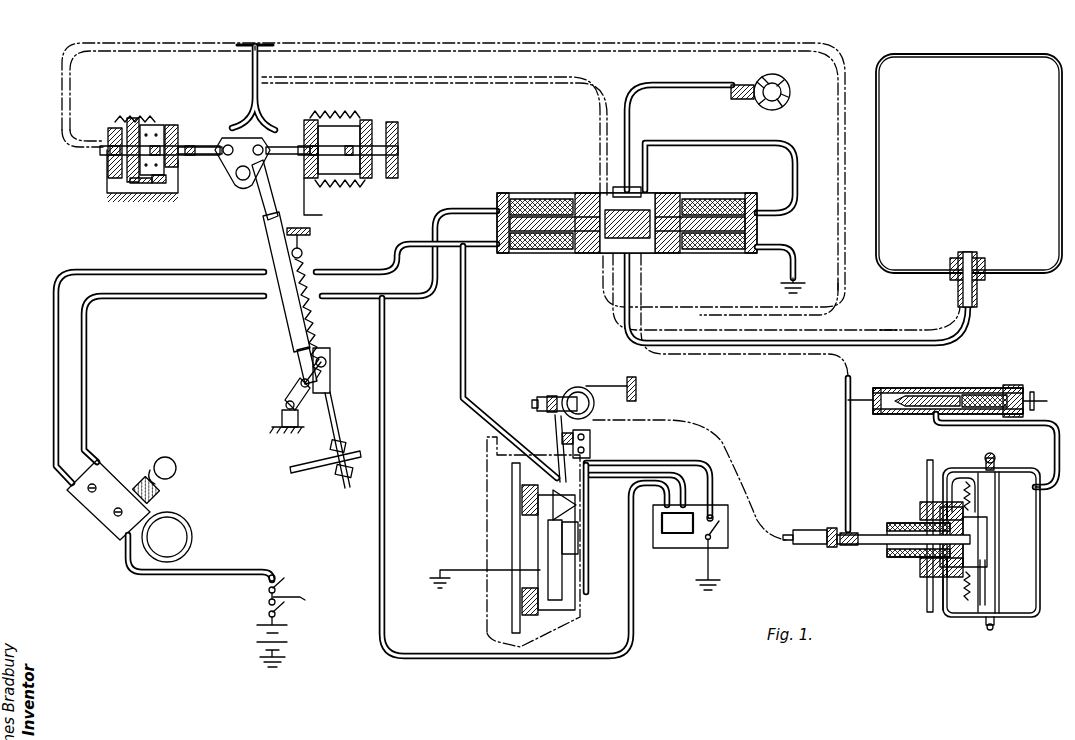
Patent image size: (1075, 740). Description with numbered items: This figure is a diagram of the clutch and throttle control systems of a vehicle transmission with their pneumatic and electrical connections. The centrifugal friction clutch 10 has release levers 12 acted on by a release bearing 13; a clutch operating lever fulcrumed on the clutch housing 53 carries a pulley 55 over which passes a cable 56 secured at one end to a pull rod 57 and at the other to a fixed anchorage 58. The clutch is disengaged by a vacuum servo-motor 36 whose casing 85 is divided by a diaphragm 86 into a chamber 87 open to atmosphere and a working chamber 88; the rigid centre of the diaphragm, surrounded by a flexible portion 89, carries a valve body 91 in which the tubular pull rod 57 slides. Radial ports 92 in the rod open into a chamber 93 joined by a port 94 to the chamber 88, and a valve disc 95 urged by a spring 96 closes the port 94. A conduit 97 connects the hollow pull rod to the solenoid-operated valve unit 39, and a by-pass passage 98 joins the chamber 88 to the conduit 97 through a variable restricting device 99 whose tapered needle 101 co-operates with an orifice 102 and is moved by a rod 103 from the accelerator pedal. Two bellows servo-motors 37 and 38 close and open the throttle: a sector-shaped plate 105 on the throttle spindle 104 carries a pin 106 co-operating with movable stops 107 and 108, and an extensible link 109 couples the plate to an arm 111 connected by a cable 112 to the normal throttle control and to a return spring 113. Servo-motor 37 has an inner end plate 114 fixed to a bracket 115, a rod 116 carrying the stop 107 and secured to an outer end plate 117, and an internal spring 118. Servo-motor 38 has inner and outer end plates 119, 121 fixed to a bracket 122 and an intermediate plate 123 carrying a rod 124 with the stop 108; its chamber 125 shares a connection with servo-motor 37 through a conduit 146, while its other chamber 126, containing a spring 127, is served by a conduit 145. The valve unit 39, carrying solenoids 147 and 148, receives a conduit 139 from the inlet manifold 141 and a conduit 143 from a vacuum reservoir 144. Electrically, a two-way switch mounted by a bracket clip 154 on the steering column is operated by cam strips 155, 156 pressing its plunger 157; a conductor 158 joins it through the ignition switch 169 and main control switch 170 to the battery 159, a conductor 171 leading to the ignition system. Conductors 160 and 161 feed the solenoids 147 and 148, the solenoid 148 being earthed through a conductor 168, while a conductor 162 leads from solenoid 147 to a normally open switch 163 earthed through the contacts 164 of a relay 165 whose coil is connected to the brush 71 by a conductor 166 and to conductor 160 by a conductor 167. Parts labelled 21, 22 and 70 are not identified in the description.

The friction clutch 10 is at (570, 616).
The release levers 12 is at (530, 590).
The release bearing 13 is at (580, 549).
The mounting bracket 21 is at (94, 512).
The distributor 22 is at (486, 481).
The vacuum servo-motor 36 is at (1048, 495).
The vacuum servo-motor 37 is at (365, 120).
The vacuum servo-motor 38 is at (135, 118).
The solenoid-operated valve unit 39 is at (693, 187).
The clutch housing 53 is at (592, 505).
The pulley 55 is at (568, 395).
The cable 56 is at (672, 419).
The pull rod 57 is at (816, 532).
The fixed anchorage 58 is at (625, 380).
The shaft 70 is at (535, 528).
The brush 71 is at (578, 531).
The casing 85 is at (1040, 615).
The diaphragm 86 is at (945, 612).
The chamber 87 is at (962, 470).
The working chamber 88 is at (1003, 600).
The flexible portion 89 is at (965, 610).
The valve body 91 is at (975, 500).
The radial ports 92 is at (927, 500).
The chamber 93 is at (900, 550).
The port 94 is at (975, 540).
The valve disc 95 is at (924, 575).
The spring 96 is at (920, 512).
The conduit 97 is at (845, 430).
The by-pass passage 98 is at (1052, 445).
The variable restricting device 99 is at (985, 392).
The tapered needle 101 is at (940, 392).
The orifice 102 is at (885, 390).
The rod 103 is at (1032, 388).
The throttle valve spindle 104 is at (262, 200).
The sector shaped plate 105 is at (240, 178).
The pin 106 is at (248, 125).
The movable stop 107 is at (289, 144).
The movable stop 108 is at (205, 156).
The link 109 is at (272, 240).
The arm 111 is at (290, 383).
The cable 112 is at (336, 425).
The return spring 113 is at (322, 318).
The inner end plate 114 is at (330, 118).
The bracket 115 is at (312, 212).
The rod 116 is at (340, 188).
The outer end plate 117 is at (380, 126).
The spring 118 is at (392, 180).
The inner end plate 119 is at (170, 125).
The outer end plate 121 is at (108, 132).
The bracket 122 is at (108, 178).
The intermediate plate 123 is at (112, 193).
The rod 124 is at (152, 122).
The chamber 125 is at (104, 151).
The chamber 126 is at (160, 182).
The spring 127 is at (140, 182).
The conduit 139 is at (634, 138).
The inlet manifold 141 is at (773, 104).
The conduit 143 is at (898, 330).
The vacuum reservoir 144 is at (969, 180).
The conduit 145 is at (598, 114).
The conduit 146 is at (840, 304).
The solenoid 147 is at (548, 254).
The solenoid 148 is at (732, 254).
The bracket clip 154 is at (192, 533).
The cam strip 155 is at (158, 468).
The cam strip 156 is at (178, 472).
The operating plunger 157 is at (165, 490).
The conductor 158 is at (138, 572).
The battery 159 is at (256, 636).
The conductor 160 is at (135, 298).
The conductor 161 is at (122, 270).
The conductor 162 is at (460, 357).
The normally open switch 163 is at (592, 445).
The contacts 164 is at (720, 536).
The relay 165 is at (676, 548).
The conductor 166 is at (662, 463).
The conductor 167 is at (384, 420).
The conductor 168 is at (795, 248).
The ignition switch 169 is at (268, 608).
The main control switch 170 is at (284, 580).
The conductor 171 is at (305, 599).